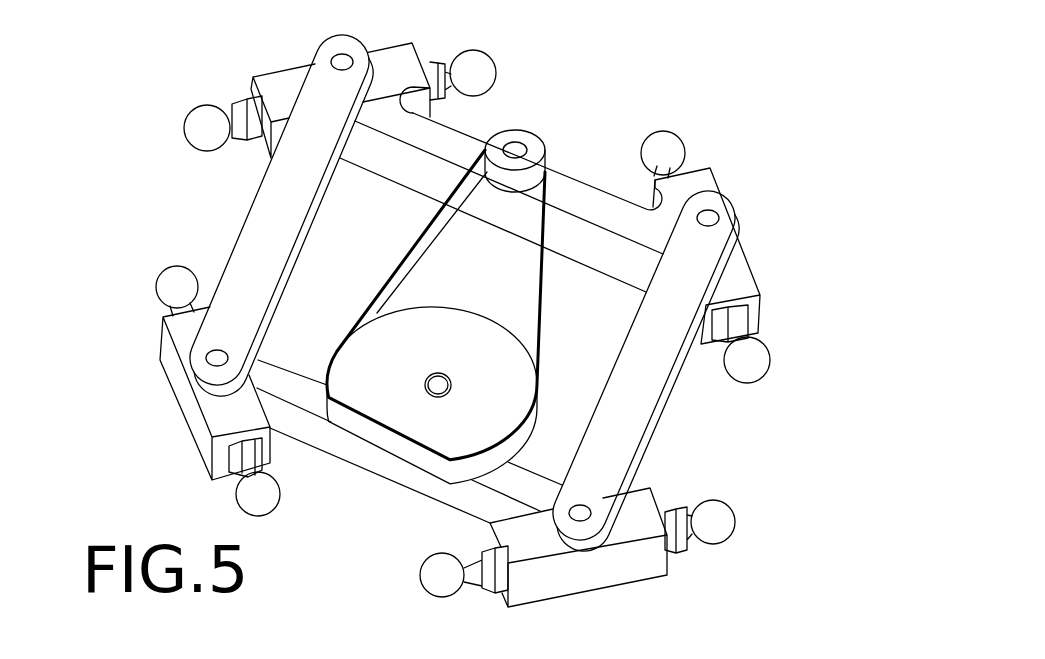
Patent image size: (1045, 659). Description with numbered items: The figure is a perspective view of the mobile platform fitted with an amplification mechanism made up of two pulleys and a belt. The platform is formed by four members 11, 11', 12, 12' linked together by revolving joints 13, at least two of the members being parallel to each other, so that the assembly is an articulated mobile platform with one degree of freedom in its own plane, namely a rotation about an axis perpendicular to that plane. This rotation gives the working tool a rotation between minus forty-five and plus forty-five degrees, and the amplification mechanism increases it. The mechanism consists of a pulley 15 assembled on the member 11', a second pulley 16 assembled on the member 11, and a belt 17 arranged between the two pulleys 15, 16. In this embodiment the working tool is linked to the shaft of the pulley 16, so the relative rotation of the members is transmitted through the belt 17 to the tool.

The member 11 is at (501, 162).
The member 11' is at (409, 475).
The member 12 is at (690, 371).
The member 12' is at (237, 215).
The revolving joint 13 is at (333, 62).
The pulley 15 is at (423, 407).
The pulley 16 is at (532, 148).
The belt 17 is at (546, 288).